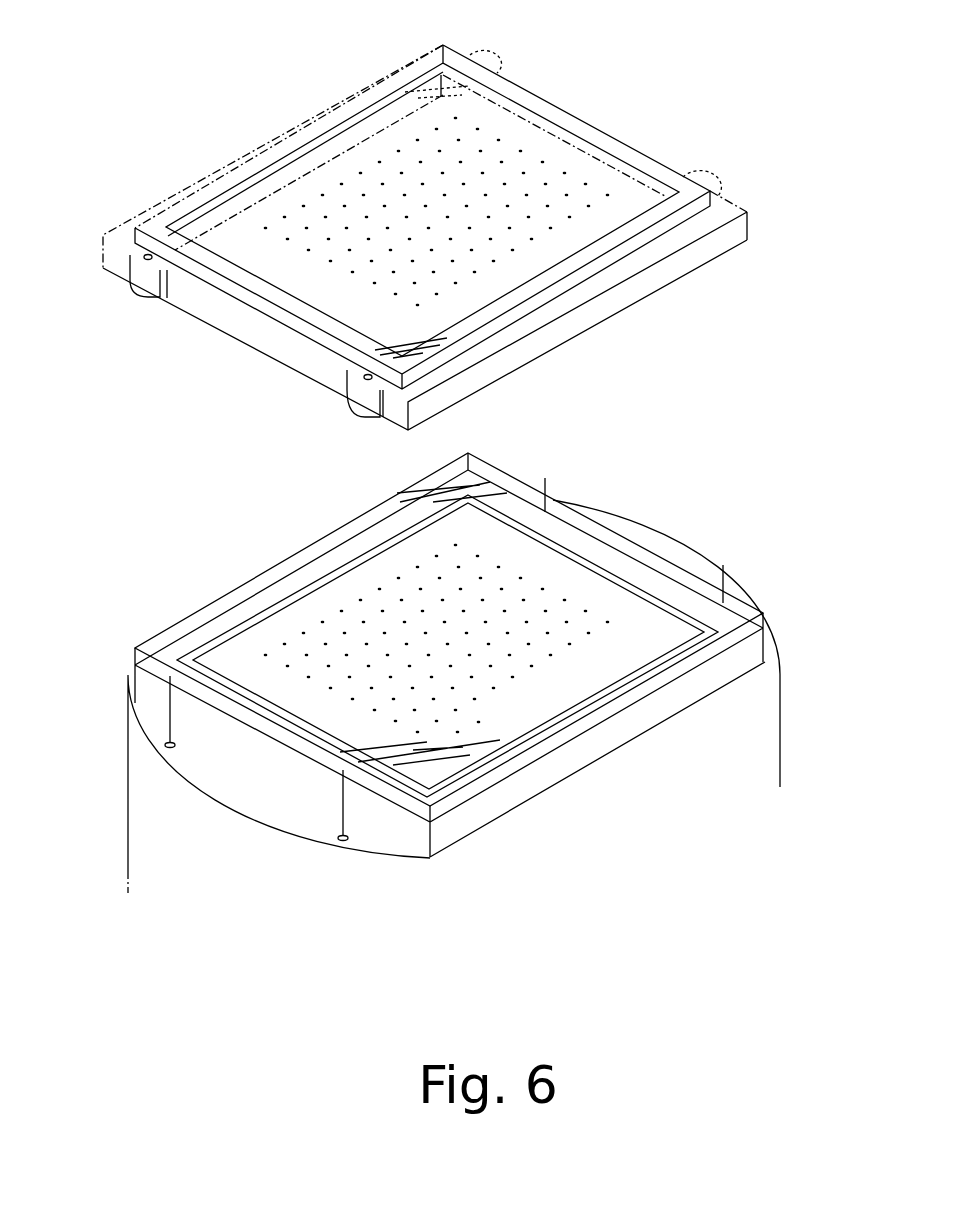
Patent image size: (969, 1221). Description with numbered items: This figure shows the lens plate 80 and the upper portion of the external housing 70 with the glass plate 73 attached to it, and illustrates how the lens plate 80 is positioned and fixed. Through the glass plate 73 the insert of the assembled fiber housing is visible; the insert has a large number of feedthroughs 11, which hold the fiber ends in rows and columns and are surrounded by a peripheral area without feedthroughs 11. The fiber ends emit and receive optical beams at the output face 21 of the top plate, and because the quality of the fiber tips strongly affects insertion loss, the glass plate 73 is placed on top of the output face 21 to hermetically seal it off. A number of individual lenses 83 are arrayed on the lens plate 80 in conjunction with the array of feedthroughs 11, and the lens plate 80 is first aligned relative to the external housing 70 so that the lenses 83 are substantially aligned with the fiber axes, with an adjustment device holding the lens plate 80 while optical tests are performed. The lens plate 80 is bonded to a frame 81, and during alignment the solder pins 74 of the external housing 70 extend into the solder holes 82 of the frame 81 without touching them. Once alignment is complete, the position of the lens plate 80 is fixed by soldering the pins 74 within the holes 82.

The feedthroughs 11 is at (535, 688).
The output face 21 is at (605, 675).
The external housing 70 is at (127, 828).
The glass plate 73 is at (210, 603).
The solder pins 74 is at (547, 493).
The lens plate 80 is at (592, 125).
The frame 81 is at (658, 290).
The solder holes 82 is at (367, 378).
The lenses 83 is at (395, 128).